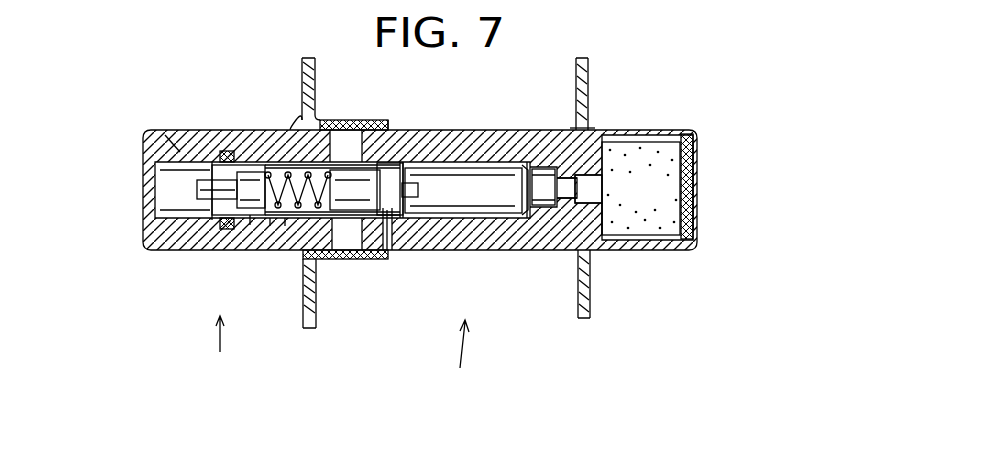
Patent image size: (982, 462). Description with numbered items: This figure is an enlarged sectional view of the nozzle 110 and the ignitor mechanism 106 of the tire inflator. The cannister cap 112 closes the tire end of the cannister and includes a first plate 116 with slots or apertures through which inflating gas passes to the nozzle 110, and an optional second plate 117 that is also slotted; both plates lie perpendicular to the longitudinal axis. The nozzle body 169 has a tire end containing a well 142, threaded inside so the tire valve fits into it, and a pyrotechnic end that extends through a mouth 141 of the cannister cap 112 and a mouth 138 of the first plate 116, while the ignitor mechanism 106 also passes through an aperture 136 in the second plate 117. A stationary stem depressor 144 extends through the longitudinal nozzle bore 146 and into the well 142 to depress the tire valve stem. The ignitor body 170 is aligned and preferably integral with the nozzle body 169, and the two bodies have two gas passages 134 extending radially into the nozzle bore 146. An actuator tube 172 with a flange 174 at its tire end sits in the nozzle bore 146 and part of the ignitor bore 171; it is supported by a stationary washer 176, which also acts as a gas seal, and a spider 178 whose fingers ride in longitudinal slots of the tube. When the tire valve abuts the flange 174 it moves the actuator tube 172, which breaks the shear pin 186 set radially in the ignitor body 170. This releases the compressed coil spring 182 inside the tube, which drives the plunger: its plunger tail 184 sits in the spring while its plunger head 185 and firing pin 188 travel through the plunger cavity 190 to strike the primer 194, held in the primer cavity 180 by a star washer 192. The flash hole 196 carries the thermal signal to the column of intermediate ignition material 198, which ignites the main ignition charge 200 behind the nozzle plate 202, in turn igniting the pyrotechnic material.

The ignitor mechanism 106 is at (460, 356).
The nozzle 110 is at (220, 351).
The cannister cap 112 is at (302, 78).
The first plate 116 is at (316, 80).
The second plate 117 is at (590, 80).
The gas passages 134 is at (348, 120).
The aperture 136 is at (574, 128).
The mouth 138 is at (387, 122).
The mouth 141 is at (300, 170).
The well 142 is at (205, 188).
The stem depressor 144 is at (165, 198).
The nozzle bore 146 is at (238, 155).
The nozzle body 169 is at (165, 248).
The ignitor body 170 is at (555, 145).
The ignitor bore 171 is at (405, 162).
The actuator tube 172 is at (240, 222).
The flange 174 is at (178, 150).
The washer 176 is at (228, 160).
The spider 178 is at (255, 222).
The primer cavity 180 is at (550, 210).
The coil spring 182 is at (280, 226).
The plunger tail 184 is at (385, 190).
The plunger head 185 is at (415, 162).
The shear pin 186 is at (395, 228).
The firing pin 188 is at (420, 188).
The plunger cavity 190 is at (470, 250).
The star washer 192 is at (528, 165).
The primer 194 is at (540, 208).
The flash hole 196 is at (585, 240).
The intermediate ignition material 198 is at (595, 160).
The main ignition charge 200 is at (625, 197).
The nozzle plate 202 is at (695, 170).